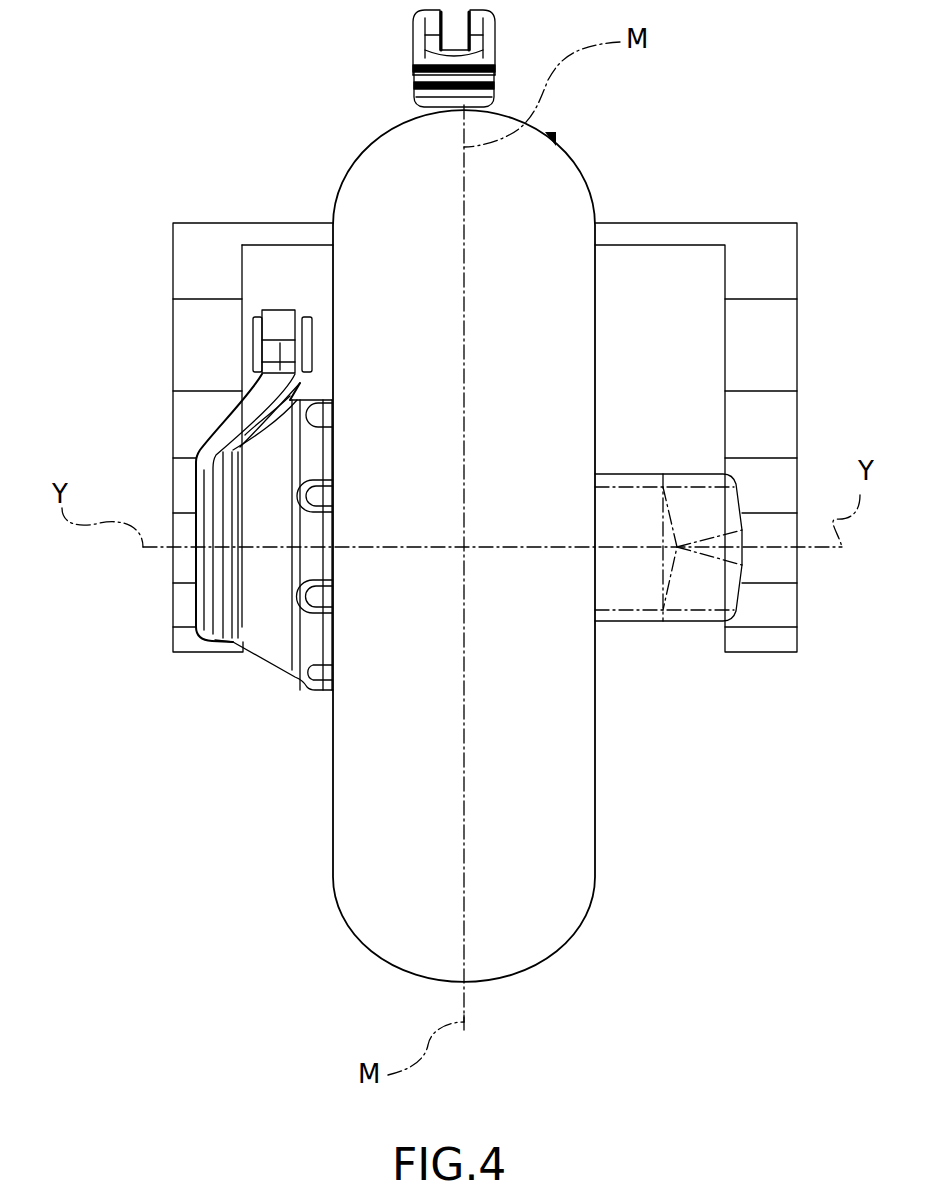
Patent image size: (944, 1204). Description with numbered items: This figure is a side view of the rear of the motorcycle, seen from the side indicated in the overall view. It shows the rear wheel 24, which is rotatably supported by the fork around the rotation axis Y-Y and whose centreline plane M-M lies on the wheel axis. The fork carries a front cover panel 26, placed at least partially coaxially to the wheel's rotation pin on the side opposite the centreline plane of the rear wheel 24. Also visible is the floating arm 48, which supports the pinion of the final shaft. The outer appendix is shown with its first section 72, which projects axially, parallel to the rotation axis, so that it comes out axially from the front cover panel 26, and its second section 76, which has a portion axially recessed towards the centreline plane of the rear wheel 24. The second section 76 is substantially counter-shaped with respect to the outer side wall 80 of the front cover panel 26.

The rear wheel 24 is at (548, 825).
The front cover panel 26 is at (260, 628).
The floating arm 48 is at (196, 416).
The first section 72 is at (196, 491).
The second section 76 is at (234, 403).
The outer side wall 80 is at (266, 448).